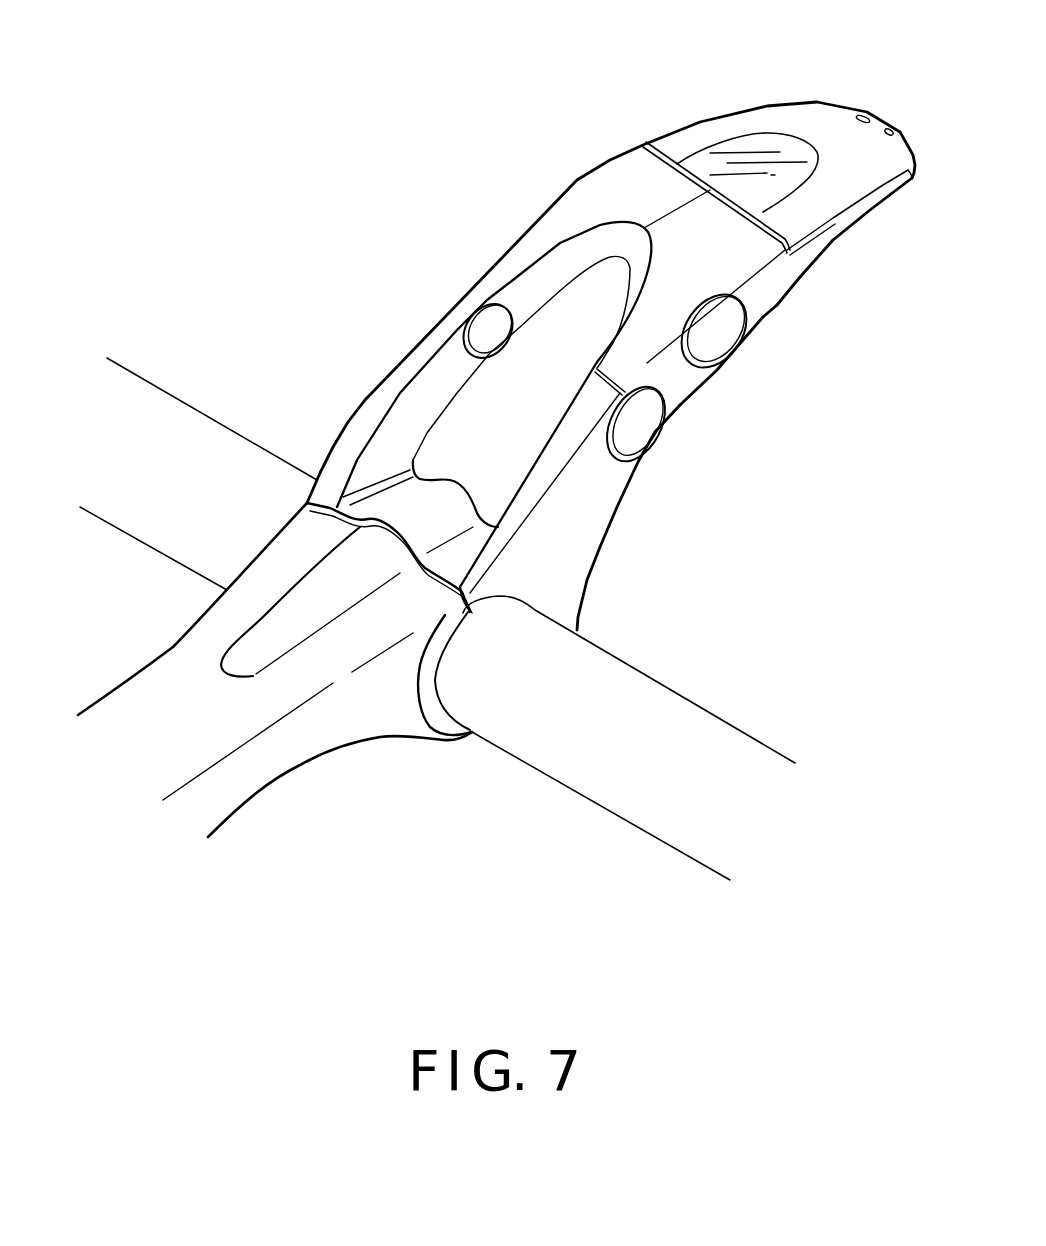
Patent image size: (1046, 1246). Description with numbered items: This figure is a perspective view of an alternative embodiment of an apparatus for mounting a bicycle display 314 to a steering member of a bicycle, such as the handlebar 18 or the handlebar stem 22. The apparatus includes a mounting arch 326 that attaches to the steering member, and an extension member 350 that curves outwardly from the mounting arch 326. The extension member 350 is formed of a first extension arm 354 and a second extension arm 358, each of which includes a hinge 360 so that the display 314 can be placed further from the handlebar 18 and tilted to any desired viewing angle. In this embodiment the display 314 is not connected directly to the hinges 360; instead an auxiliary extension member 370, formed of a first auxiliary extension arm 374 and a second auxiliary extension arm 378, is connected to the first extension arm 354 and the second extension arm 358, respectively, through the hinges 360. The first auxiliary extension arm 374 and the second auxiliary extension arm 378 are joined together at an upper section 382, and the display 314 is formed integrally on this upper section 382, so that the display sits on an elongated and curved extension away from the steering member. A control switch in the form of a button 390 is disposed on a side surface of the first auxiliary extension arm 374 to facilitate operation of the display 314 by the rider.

The bicycle display 314 is at (757, 85).
The upper section 382 is at (640, 188).
The second auxiliary extension arm 378 is at (600, 175).
The auxiliary extension member 370 is at (577, 182).
The first auxiliary extension arm 374 is at (773, 306).
The second extension arm 358 is at (420, 333).
The hinge 360 is at (483, 328).
The button 390 is at (713, 330).
The first extension arm 354 is at (603, 498).
The extension member 350 is at (620, 557).
The mounting arch 326 is at (605, 629).
The handlebar stem 22 is at (137, 689).
The handlebar 18 is at (114, 510).